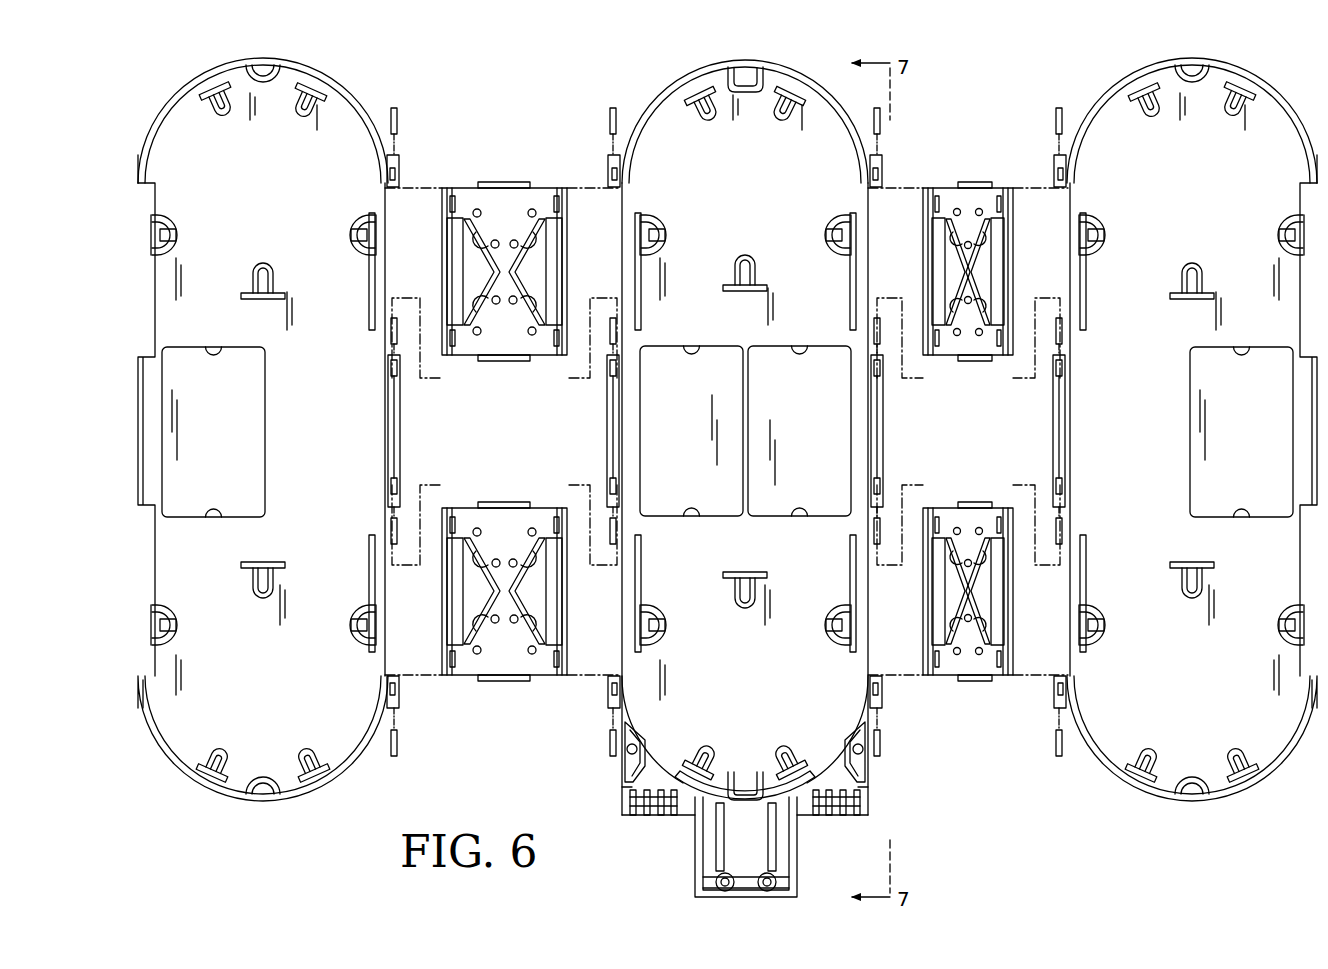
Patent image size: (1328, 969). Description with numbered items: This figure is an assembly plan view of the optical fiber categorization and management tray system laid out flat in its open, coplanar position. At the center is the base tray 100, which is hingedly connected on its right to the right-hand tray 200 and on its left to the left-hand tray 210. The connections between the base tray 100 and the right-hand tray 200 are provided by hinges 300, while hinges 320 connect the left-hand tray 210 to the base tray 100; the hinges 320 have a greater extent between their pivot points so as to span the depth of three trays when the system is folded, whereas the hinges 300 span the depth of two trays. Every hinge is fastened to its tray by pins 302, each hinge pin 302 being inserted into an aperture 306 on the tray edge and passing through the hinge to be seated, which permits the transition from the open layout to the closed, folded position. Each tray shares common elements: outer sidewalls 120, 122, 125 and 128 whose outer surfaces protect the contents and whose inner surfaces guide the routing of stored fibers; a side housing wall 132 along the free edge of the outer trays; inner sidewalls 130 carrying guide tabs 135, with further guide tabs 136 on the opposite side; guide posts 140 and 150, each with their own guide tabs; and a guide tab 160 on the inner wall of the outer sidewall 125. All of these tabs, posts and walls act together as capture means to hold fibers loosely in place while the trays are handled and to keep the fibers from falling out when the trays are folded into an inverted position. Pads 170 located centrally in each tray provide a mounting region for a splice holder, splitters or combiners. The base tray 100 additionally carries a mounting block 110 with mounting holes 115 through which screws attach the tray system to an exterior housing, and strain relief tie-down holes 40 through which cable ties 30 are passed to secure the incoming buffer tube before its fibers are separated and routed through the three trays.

The left-hand tray 210 is at (158, 95).
The base tray 100 is at (631, 105).
The right-hand tray 200 is at (1087, 95).
The outer sidewall 125 is at (318, 72).
The outer sidewall 128 is at (236, 795).
The side housing wall 132 is at (157, 312).
The outer sidewall 120 is at (150, 690).
The guide tab 160 is at (258, 72).
The guide post 150 is at (305, 118).
The inner sidewall 130 is at (370, 310).
The guide tab 135 is at (350, 236).
The outer snap clip 136 is at (172, 232).
The guide post 140 is at (262, 273).
The pad 170 is at (250, 425).
The pin 302 is at (399, 120).
The aperture 306 is at (388, 182).
The outer sidewall 122 is at (388, 441).
The hinge 320 is at (500, 190).
The hinge 300 is at (968, 192).
The strain relief tie-down hole 40 is at (631, 806).
The cable tie 30 is at (825, 805).
The mounting hole 115 is at (628, 750).
The mounting block 110 is at (697, 838).